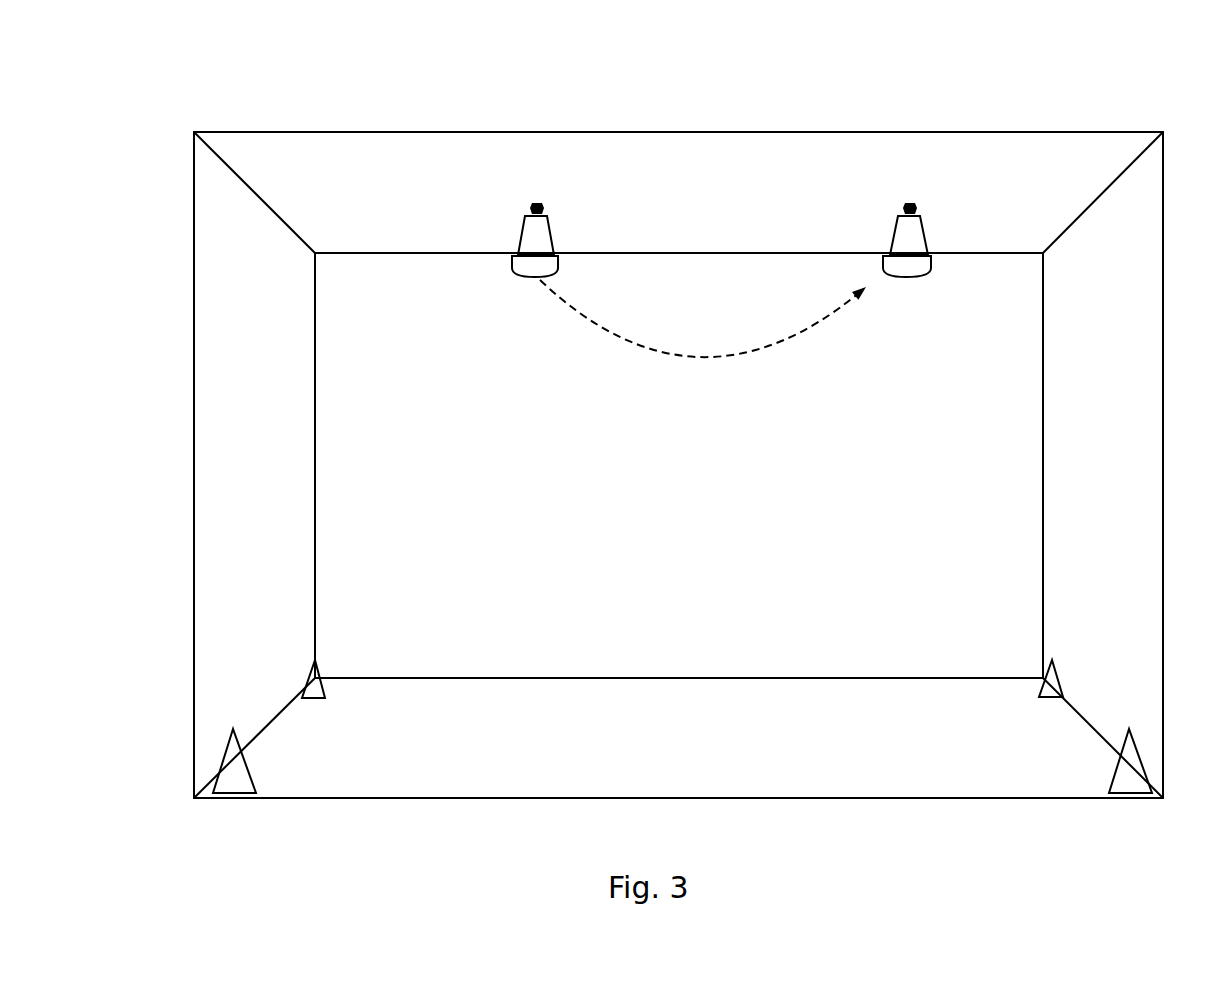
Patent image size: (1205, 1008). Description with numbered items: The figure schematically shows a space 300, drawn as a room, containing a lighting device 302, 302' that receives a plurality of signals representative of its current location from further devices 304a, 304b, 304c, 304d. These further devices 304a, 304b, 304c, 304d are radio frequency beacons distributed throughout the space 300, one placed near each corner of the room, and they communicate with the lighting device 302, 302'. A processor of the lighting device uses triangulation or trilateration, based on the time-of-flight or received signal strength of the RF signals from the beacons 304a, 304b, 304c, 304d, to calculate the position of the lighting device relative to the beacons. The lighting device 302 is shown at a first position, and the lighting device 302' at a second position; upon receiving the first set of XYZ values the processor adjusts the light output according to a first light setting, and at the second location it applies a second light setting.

The space 300 is at (183, 110).
The lighting device 302 is at (481, 237).
The lighting device 302' is at (846, 237).
The further device 304a is at (230, 770).
The further device 304b is at (317, 683).
The further device 304c is at (1050, 673).
The further device 304d is at (1128, 775).